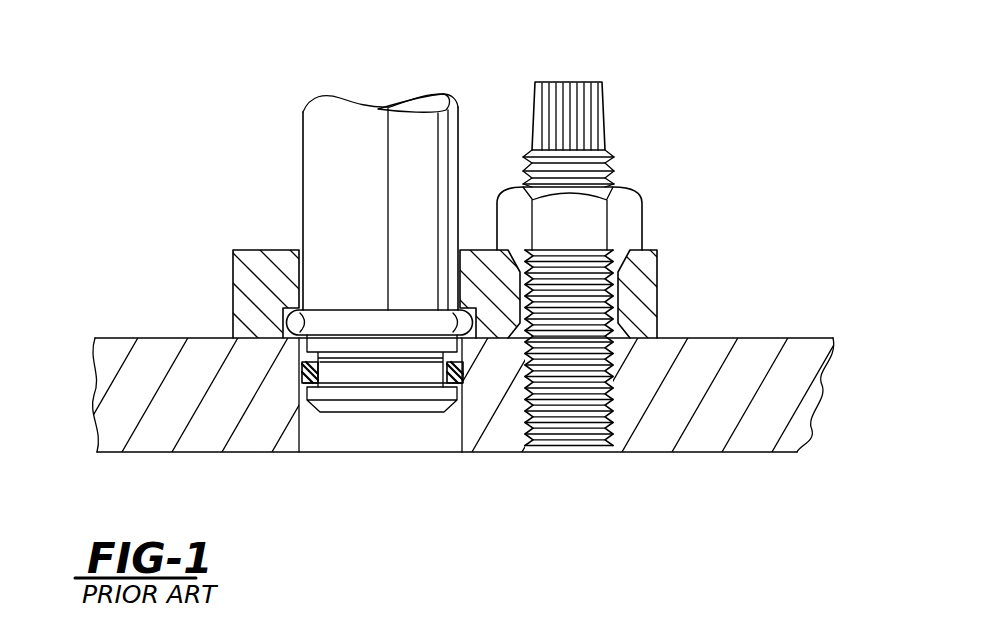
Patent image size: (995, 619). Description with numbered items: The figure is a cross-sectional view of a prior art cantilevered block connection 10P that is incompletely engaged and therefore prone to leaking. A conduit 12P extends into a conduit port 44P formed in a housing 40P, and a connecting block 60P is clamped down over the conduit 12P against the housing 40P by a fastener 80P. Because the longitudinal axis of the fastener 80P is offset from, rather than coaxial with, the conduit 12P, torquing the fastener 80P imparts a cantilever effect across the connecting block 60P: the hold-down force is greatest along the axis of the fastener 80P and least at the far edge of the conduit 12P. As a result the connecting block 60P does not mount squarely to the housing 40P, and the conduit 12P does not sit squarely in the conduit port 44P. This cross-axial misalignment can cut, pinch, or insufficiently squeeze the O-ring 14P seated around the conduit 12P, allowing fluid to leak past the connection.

The cantilevered block connection 10P is at (120, 172).
The conduit 12P is at (312, 125).
The O-ring 14P is at (300, 375).
The housing 40P is at (122, 332).
The conduit port 44P is at (302, 432).
The connecting block 60P is at (224, 247).
The fastener 80P is at (598, 108).